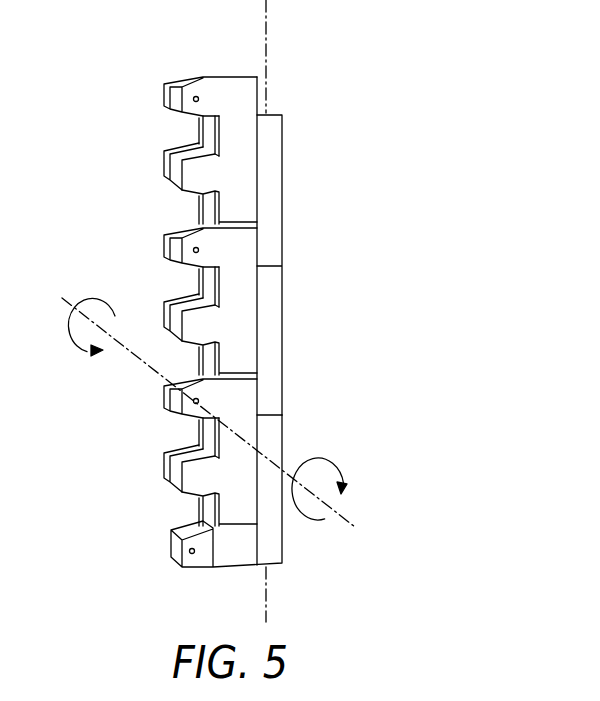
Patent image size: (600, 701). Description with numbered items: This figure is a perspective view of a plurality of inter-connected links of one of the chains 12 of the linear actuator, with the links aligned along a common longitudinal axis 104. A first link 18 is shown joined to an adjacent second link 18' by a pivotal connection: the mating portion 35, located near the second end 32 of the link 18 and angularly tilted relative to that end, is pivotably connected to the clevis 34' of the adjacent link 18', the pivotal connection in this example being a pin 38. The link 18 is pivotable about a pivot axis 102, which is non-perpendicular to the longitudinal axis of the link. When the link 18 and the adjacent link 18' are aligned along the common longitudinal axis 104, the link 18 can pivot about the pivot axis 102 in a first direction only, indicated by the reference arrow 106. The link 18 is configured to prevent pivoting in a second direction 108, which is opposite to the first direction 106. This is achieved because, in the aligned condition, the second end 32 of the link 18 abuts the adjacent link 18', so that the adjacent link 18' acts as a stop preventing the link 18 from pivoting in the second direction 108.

The chain 12 is at (320, 247).
The inter-connected link 18 is at (304, 265).
The adjacent second link 18' is at (224, 417).
The second end 32 is at (263, 412).
The clevis 34' is at (173, 411).
The mating portion 35 is at (190, 382).
The pin 38 is at (195, 405).
The pivot axis 102 is at (352, 522).
The common longitudinal axis 104 is at (267, 33).
The first direction 106 is at (100, 298).
The second direction 108 is at (330, 460).